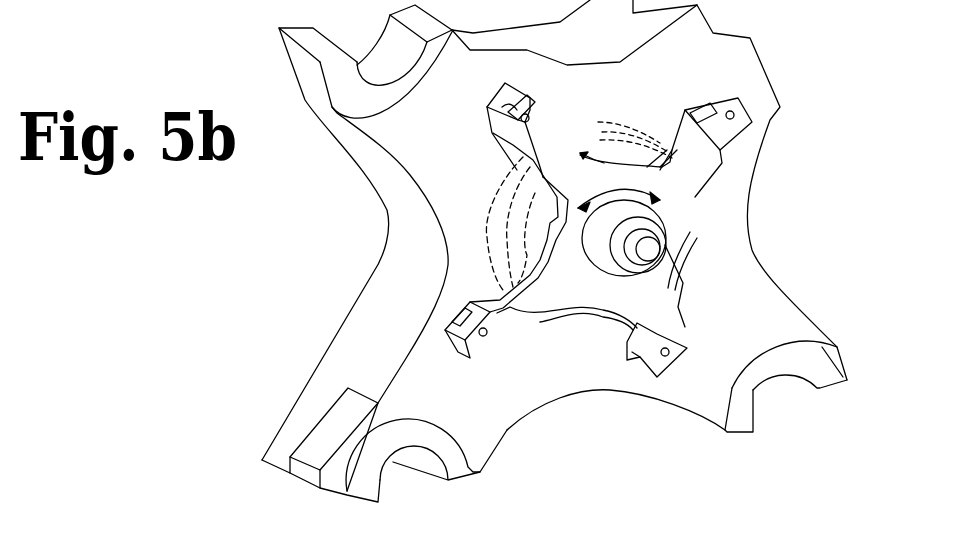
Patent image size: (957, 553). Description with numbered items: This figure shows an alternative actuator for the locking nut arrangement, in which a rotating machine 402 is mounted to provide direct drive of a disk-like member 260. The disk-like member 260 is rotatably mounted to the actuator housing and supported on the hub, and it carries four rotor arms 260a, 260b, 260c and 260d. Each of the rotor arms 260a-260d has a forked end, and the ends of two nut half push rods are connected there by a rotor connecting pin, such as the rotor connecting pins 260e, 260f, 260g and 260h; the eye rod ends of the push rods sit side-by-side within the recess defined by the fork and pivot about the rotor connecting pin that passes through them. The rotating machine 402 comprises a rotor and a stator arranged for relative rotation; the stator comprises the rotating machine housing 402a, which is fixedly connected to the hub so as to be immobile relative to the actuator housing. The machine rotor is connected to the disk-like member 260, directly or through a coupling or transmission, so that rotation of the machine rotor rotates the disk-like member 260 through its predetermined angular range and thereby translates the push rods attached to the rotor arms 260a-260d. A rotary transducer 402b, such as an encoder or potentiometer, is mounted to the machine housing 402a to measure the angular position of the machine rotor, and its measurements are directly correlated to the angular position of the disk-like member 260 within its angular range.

The disk-like member 260 is at (634, 300).
The rotor arm 260a is at (730, 112).
The rotor arm 260b is at (518, 95).
The rotor arm 260c is at (463, 353).
The rotor arm 260d is at (638, 345).
The rotor connecting pin 260e is at (728, 112).
The rotor connecting pin 260f is at (513, 110).
The rotor connecting pin 260g is at (485, 336).
The rotor connecting pin 260h is at (668, 348).
The rotating machine 402 is at (608, 180).
The rotating machine housing 402a is at (620, 213).
The rotary transducer 402b is at (650, 247).